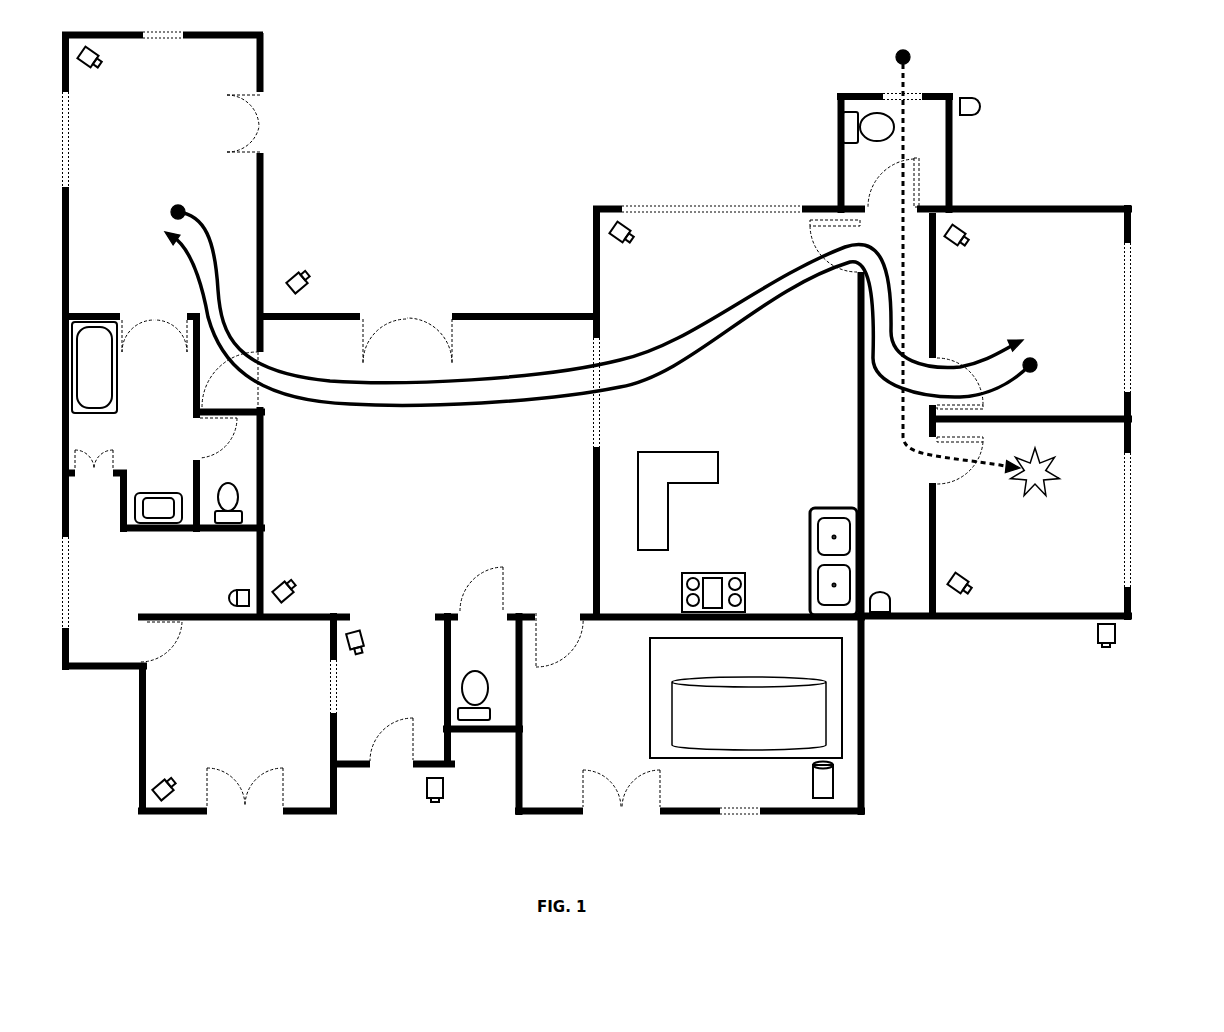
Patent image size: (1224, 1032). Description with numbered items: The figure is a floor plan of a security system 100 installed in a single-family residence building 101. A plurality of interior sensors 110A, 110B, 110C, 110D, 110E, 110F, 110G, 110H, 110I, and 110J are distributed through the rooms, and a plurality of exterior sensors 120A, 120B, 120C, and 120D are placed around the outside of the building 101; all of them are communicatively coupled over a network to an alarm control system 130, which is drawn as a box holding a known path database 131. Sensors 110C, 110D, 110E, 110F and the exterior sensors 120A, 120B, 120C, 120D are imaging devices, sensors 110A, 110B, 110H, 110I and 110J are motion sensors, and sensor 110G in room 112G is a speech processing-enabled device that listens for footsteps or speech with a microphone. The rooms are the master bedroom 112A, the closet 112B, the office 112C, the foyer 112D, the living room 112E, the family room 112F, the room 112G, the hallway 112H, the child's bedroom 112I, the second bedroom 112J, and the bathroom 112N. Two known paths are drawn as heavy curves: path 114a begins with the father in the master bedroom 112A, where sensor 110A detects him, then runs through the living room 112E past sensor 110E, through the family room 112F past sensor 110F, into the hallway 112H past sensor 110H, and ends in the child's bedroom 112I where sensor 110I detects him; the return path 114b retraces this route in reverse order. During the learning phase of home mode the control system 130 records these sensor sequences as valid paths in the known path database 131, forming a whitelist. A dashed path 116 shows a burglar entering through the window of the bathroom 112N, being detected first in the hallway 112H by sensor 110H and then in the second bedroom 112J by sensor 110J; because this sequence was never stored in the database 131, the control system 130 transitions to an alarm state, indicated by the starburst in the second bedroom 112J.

The security system 100 is at (1035, 720).
The single-family residence building 101 is at (1135, 605).
The motion sensor 110A is at (99, 58).
The motion sensor 110B is at (235, 598).
The imaging device sensor 110C is at (153, 790).
The imaging device sensor 110D is at (365, 640).
The imaging device sensor 110E is at (296, 588).
The imaging device sensor 110F is at (633, 236).
The speech processing-enabled device sensor 110G is at (833, 782).
The motion sensor 110H is at (892, 602).
The motion sensor 110I is at (968, 238).
The motion sensor 110J is at (970, 585).
The master bedroom 112A is at (162, 175).
The closet 112B is at (104, 714).
The office 112C is at (238, 714).
The foyer 112D is at (390, 691).
The living room 112E is at (398, 466).
The family room 112F is at (728, 413).
The room 112G is at (690, 714).
The hallway 112H is at (897, 413).
The child's bedroom 112I is at (1030, 314).
The second bedroom 112J is at (1030, 518).
The bathroom 112N is at (895, 152).
The known path 114a is at (700, 322).
The return path 114b is at (720, 330).
The path 116 is at (899, 78).
The exterior sensor 120A is at (427, 787).
The exterior sensor 120B is at (1095, 636).
The exterior sensor 120C is at (306, 276).
The exterior sensor 120D is at (980, 105).
The alarm control system 130 is at (746, 698).
The known path database 131 is at (749, 713).